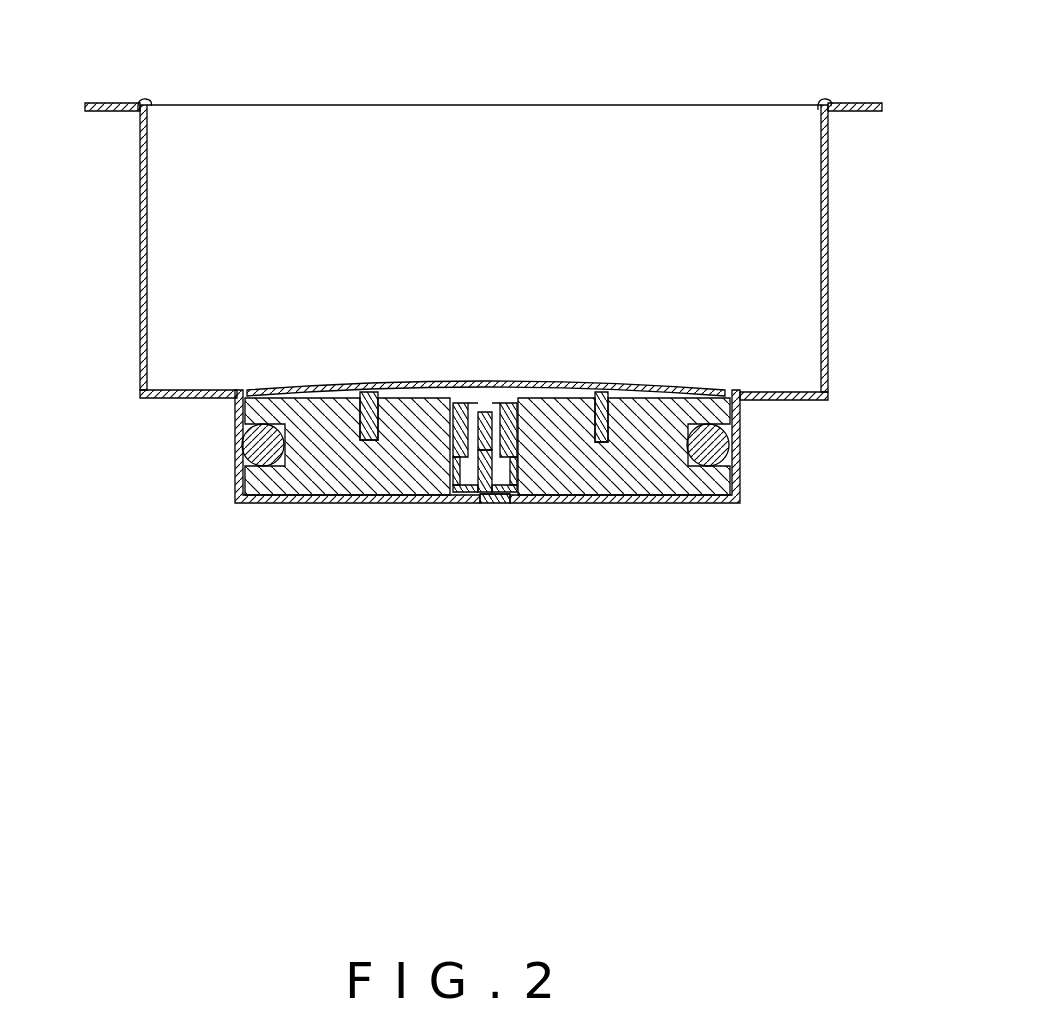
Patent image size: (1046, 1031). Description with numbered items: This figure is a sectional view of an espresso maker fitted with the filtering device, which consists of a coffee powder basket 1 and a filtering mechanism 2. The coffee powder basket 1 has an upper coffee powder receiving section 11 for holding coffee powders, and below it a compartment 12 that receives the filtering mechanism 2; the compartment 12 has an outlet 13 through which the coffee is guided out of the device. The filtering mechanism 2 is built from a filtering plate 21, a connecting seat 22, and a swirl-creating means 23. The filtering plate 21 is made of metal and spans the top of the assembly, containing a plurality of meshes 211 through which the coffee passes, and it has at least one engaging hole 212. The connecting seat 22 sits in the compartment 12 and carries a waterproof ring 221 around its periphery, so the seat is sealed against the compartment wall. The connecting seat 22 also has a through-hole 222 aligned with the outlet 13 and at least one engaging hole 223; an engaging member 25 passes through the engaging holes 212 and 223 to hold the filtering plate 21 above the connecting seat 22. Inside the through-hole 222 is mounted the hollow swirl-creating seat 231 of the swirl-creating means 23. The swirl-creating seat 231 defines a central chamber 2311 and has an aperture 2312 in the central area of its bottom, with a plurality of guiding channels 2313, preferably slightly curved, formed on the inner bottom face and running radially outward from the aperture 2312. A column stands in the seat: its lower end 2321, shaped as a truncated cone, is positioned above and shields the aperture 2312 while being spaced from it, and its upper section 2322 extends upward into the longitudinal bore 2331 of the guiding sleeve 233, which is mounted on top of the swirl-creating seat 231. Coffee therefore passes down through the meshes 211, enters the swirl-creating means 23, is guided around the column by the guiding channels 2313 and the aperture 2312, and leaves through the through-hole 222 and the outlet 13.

The coffee powder basket 1 is at (840, 215).
The coffee powder receiving section 11 is at (768, 257).
The compartment 12 is at (725, 413).
The outlet 13 is at (480, 505).
The filtering mechanism 2 is at (278, 382).
The filtering plate 21 is at (310, 385).
The meshes 211 is at (327, 388).
The engaging hole 212 is at (356, 388).
The connecting seat 22 is at (650, 475).
The waterproof ring 221 is at (712, 450).
The through-hole 222 is at (450, 403).
The engaging hole 223 is at (715, 495).
The swirl-creating means 23 is at (495, 398).
The swirl-creating seat 231 is at (530, 500).
The central chamber 2311 is at (468, 462).
The aperture 2312 is at (490, 500).
The guiding channels 2313 is at (500, 500).
The lower end 2321 is at (478, 482).
The upper section 2322 is at (508, 398).
The guiding sleeve 233 is at (532, 398).
The longitudinal bore 2331 is at (474, 412).
The engaging member 25 is at (607, 388).